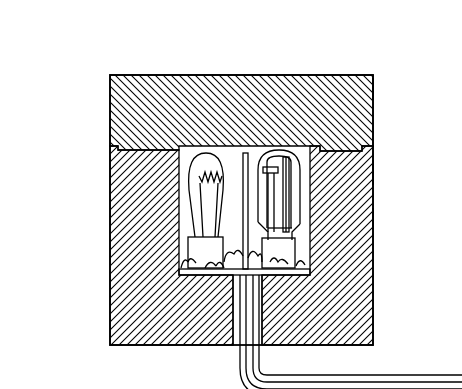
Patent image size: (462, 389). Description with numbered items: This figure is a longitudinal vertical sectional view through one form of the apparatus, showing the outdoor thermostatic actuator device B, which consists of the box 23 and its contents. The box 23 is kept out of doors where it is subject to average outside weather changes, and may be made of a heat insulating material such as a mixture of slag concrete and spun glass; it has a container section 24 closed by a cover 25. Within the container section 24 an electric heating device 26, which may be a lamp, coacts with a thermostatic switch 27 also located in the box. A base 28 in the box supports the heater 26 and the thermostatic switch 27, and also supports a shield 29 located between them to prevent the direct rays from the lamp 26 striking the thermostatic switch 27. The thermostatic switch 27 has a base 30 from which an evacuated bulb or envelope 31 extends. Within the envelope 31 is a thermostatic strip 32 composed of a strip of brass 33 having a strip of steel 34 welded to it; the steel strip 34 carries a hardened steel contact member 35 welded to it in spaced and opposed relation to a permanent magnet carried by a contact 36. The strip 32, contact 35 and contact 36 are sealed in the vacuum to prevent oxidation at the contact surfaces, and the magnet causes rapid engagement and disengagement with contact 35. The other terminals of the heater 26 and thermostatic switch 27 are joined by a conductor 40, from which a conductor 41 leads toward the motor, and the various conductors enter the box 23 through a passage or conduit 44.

The box 23 is at (256, 66).
The cover 25 is at (360, 110).
The container section 24 is at (298, 216).
The thermostatic switch 27 is at (373, 174).
The evacuated bulb or envelope 31 is at (373, 219).
The outdoor thermostatic actuator device B is at (384, 91).
The base 28 is at (262, 274).
The shield 29 is at (221, 154).
The electric heating device 26 is at (192, 194).
The strip of steel 34 is at (243, 211).
The conductor 40 is at (220, 248).
The contact 36 is at (243, 152).
The hardened steel contact member 35 is at (284, 156).
The thermostatic strip 32 is at (301, 190).
The strip of brass 33 is at (292, 226).
The base 30 is at (263, 249).
The passage or conduit 44 is at (233, 328).
The conductor 41 is at (320, 377).